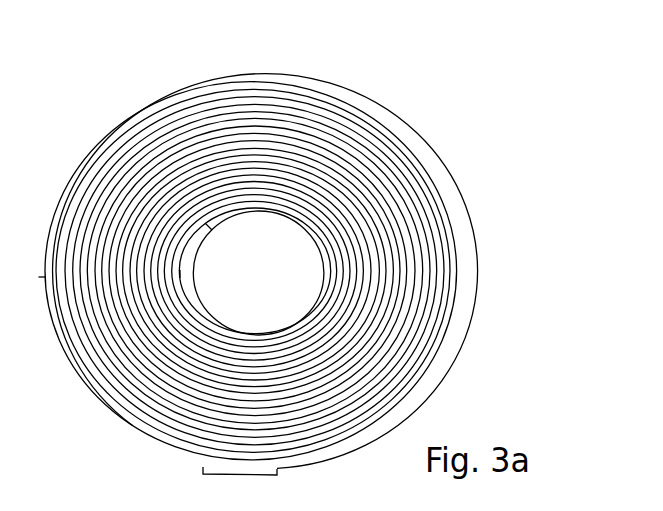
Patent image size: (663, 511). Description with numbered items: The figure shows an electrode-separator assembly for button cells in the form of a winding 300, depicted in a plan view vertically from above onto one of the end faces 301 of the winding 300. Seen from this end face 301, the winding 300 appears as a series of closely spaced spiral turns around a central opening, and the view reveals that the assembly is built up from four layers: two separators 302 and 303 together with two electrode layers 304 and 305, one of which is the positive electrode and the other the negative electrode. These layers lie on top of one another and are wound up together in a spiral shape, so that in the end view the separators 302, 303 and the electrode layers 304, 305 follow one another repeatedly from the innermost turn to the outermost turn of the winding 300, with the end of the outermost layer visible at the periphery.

The winding 300 is at (297, 252).
The end face 301 is at (261, 155).
The separator 302 is at (462, 242).
The separator 303 is at (450, 222).
The electrode layer 304 is at (462, 278).
The electrode layer 305 is at (450, 310).